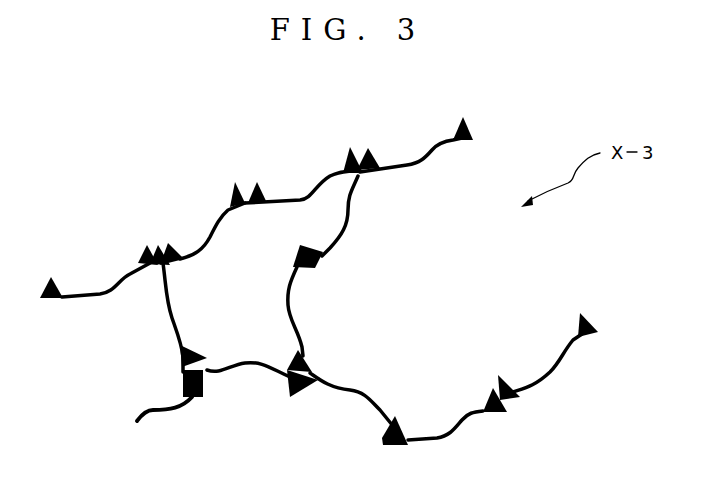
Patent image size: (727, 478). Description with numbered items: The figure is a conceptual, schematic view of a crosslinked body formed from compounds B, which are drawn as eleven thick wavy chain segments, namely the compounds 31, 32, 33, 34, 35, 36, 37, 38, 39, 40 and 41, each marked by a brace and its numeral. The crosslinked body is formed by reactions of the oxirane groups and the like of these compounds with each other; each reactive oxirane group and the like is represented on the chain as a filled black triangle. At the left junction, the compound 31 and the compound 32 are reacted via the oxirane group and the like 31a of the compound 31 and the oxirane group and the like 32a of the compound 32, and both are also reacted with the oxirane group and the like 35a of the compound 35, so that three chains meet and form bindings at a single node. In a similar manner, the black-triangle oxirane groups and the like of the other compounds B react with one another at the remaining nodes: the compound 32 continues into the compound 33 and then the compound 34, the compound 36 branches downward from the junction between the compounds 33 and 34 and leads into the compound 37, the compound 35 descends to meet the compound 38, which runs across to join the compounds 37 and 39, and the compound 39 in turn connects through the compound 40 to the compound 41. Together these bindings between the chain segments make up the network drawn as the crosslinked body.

The compound 31 is at (133, 252).
The oxirane group and the like 31a is at (141, 248).
The compound 32 is at (233, 195).
The oxirane group and the like 32a is at (186, 259).
The compound 33 is at (337, 150).
The compound 34 is at (457, 113).
The compound 35 is at (155, 272).
The oxirane group and the like 35a is at (157, 247).
The compound 36 is at (367, 180).
The compound 37 is at (317, 270).
The compound 38 is at (287, 403).
The compound 39 is at (323, 365).
The compound 40 is at (480, 397).
The compound 41 is at (573, 323).